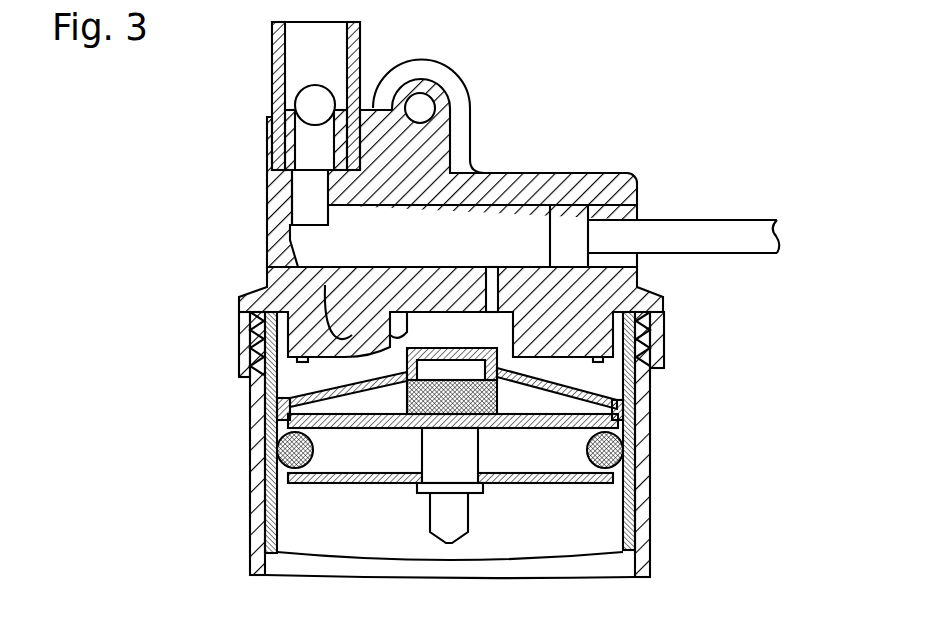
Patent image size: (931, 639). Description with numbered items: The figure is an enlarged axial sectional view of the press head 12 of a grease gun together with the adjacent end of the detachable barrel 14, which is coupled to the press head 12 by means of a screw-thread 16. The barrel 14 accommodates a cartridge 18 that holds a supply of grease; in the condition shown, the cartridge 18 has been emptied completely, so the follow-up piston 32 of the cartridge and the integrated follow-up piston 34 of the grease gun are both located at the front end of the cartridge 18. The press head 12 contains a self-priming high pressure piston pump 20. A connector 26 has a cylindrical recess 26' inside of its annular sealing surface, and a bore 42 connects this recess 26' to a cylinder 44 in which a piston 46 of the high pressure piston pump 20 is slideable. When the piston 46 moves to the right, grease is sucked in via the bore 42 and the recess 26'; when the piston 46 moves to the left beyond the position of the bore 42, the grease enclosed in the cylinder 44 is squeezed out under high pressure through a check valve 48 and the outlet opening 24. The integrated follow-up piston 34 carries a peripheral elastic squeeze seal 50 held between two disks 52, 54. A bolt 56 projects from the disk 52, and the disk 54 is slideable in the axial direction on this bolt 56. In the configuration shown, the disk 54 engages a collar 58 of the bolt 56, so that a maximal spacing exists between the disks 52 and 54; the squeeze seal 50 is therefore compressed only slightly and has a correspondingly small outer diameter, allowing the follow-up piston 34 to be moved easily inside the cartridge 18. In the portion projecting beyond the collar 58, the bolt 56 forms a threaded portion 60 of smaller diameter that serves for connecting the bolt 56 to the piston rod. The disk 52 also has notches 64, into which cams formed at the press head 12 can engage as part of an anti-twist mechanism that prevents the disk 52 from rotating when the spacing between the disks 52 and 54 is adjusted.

The press head 12 is at (268, 188).
The barrel 14 is at (253, 517).
The screw-thread 16 is at (238, 340).
The cartridge 18 is at (650, 507).
The high pressure piston pump 20 is at (618, 157).
The outlet opening 24 is at (363, 48).
The connector 26 is at (346, 278).
The cylindrical recess 26' is at (408, 278).
The follow-up piston of the cartridge 32 is at (620, 395).
The integrated follow-up piston 34 is at (372, 505).
The bore 42 is at (492, 275).
The cylinder 44 is at (302, 240).
The piston 46 is at (567, 215).
The check valve 48 is at (315, 105).
The squeeze seal 50 is at (292, 452).
The disk 52 is at (408, 428).
The disk 54 is at (530, 483).
The bolt 56 is at (468, 457).
The collar 58 is at (473, 495).
The threaded portion 60 is at (447, 540).
The notches 64 is at (288, 413).